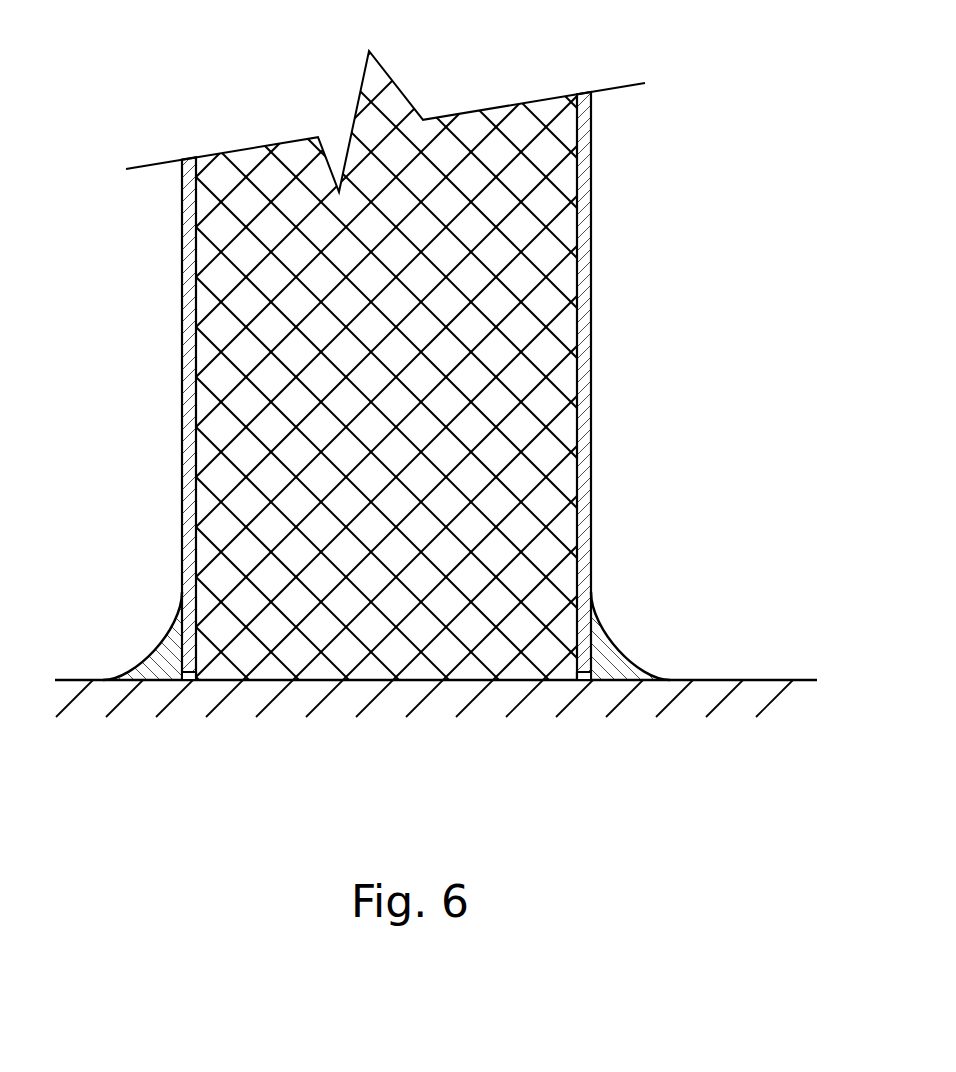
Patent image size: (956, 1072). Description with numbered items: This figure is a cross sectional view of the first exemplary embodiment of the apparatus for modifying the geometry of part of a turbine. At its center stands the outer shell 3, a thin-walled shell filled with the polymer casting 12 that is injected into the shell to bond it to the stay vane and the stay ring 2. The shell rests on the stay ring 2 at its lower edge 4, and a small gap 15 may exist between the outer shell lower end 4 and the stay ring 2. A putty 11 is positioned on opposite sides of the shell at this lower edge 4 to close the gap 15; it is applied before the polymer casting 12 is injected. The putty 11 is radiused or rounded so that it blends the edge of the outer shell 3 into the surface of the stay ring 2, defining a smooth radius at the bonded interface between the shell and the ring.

The polymer casting 12 is at (499, 205).
The outer shell 3 is at (592, 289).
The putty 11 is at (147, 652).
The stay ring 2 is at (767, 678).
The gap 15 is at (185, 682).
The lower edge 4 is at (196, 682).